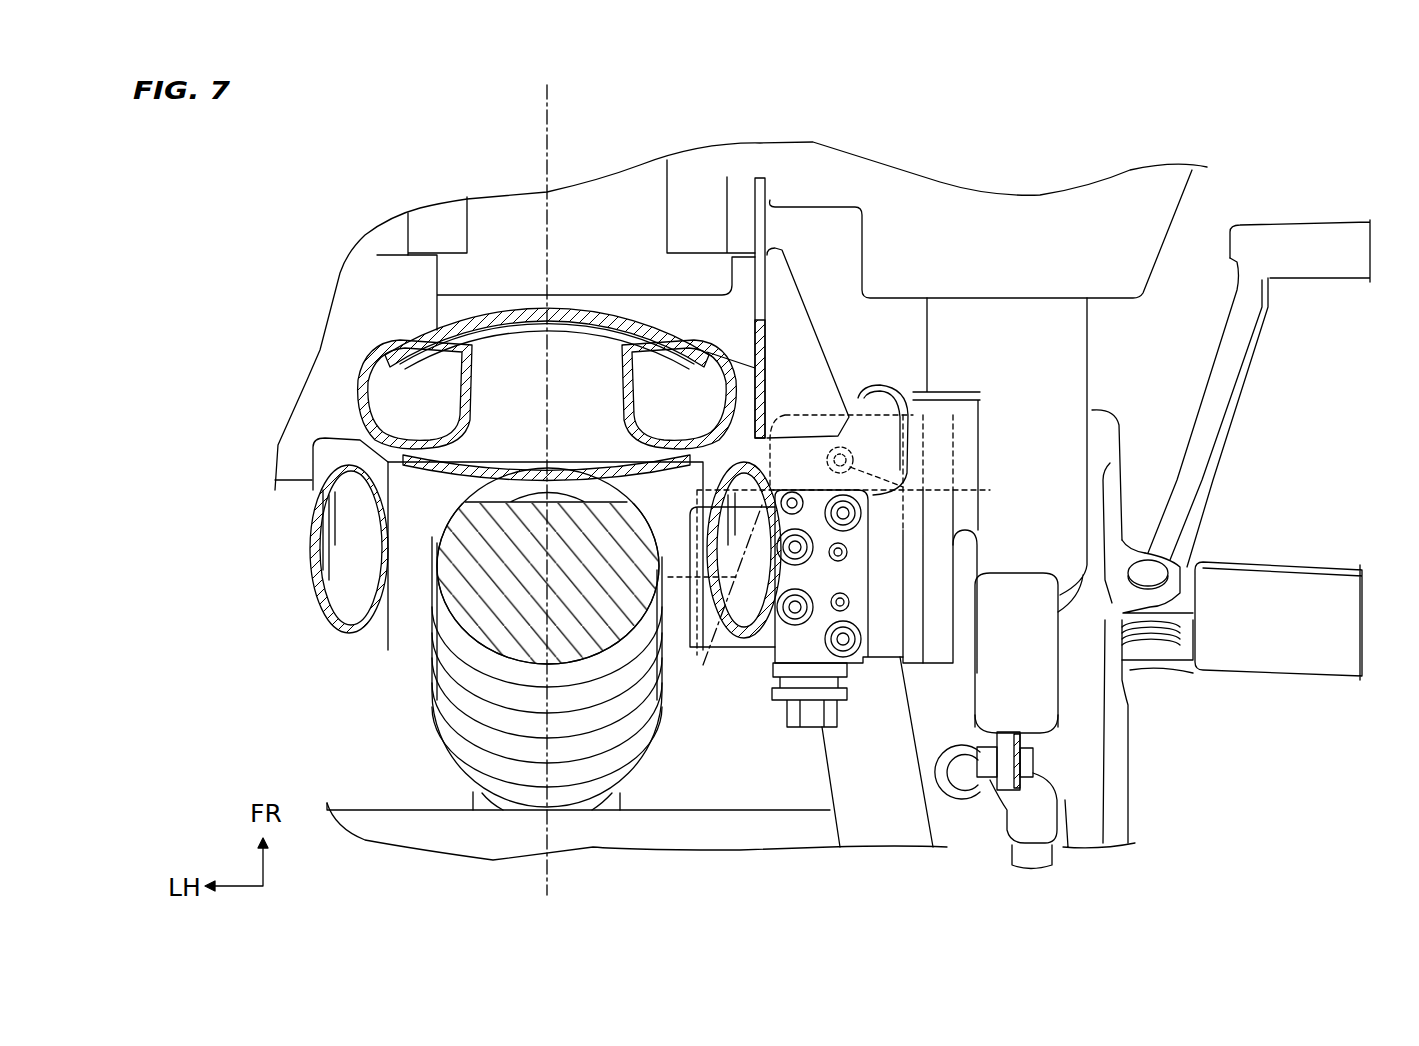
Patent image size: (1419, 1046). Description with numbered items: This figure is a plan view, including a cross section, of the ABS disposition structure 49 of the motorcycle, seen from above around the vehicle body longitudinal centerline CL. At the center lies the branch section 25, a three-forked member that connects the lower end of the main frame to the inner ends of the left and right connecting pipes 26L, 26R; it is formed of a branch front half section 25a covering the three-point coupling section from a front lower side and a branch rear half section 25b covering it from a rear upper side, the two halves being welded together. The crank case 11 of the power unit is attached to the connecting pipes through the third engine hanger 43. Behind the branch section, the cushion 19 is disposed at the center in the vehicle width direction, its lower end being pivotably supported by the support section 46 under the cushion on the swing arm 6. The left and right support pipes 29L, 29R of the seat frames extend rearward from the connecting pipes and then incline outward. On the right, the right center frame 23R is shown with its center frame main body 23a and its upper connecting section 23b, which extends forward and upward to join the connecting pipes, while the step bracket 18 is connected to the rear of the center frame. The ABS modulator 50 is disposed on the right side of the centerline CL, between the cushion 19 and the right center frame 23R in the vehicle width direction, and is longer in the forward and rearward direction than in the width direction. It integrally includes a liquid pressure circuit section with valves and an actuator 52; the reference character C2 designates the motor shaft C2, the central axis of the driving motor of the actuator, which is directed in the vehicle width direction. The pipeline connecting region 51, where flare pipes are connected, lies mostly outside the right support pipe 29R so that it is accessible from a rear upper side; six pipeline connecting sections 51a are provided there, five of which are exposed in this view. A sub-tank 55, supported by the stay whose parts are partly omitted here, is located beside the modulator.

The crank case 11 is at (938, 200).
The third engine hanger 43 is at (762, 177).
The ABS disposition structure 49 is at (1070, 148).
The branch section 25 is at (547, 295).
The branch front half section 25a is at (525, 312).
The branch rear half section 25b is at (545, 552).
The left connecting pipe 26L is at (340, 378).
The right connecting pipe 26R is at (858, 396).
The left support pipe 29L is at (313, 505).
The right support pipe 29R is at (707, 480).
The cushion 19 is at (477, 627).
The support section under the cushion 46 is at (620, 805).
The upper connecting section 23b is at (915, 393).
The right center frame 23R is at (1098, 361).
The center frame main body 23a is at (1073, 391).
The step bracket 18 is at (1128, 800).
The ABS modulator 50 is at (892, 586).
The pipeline connecting region 51 is at (812, 655).
The pipeline connecting section 51a is at (808, 567).
The actuator 52 is at (735, 645).
The sub-tank 55 is at (1040, 700).
The swing arm 6 is at (893, 822).
The vehicle body longitudinal centerline CL is at (550, 112).
The motor shaft C2 is at (722, 606).